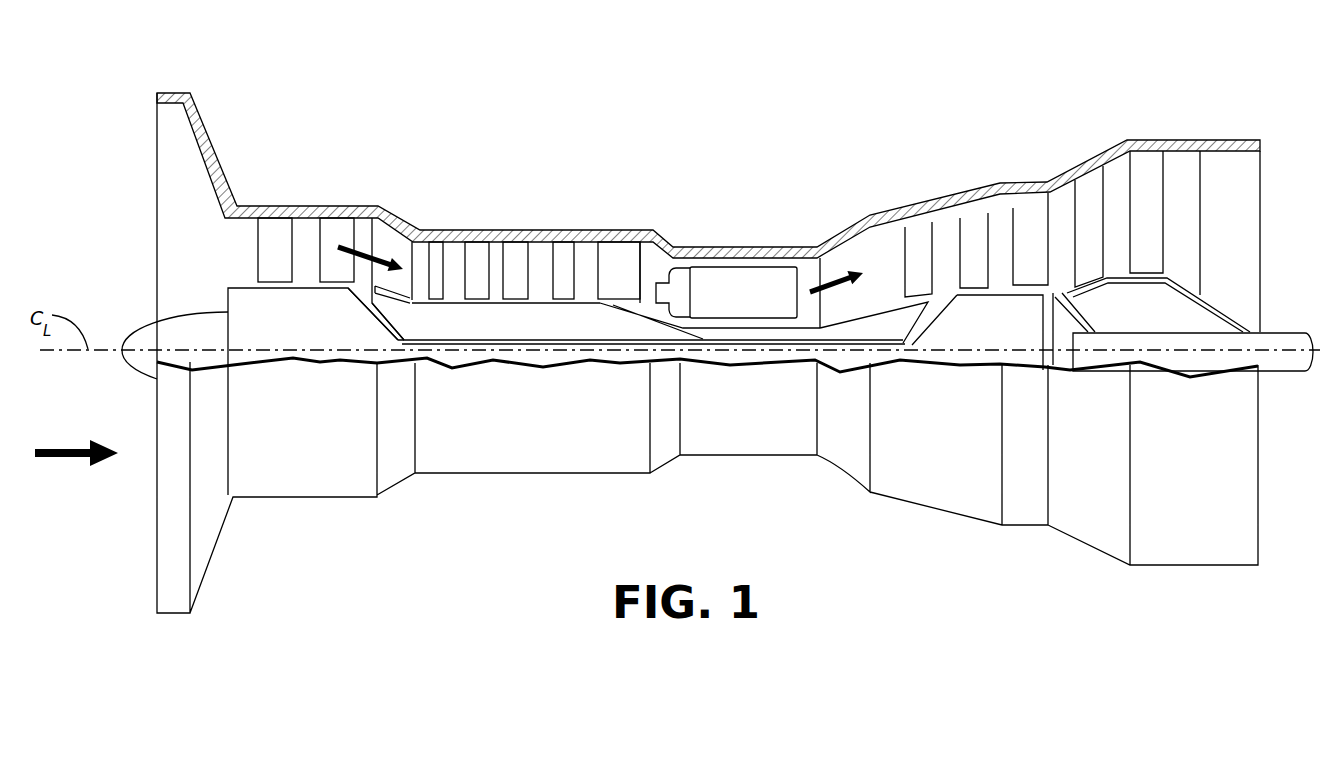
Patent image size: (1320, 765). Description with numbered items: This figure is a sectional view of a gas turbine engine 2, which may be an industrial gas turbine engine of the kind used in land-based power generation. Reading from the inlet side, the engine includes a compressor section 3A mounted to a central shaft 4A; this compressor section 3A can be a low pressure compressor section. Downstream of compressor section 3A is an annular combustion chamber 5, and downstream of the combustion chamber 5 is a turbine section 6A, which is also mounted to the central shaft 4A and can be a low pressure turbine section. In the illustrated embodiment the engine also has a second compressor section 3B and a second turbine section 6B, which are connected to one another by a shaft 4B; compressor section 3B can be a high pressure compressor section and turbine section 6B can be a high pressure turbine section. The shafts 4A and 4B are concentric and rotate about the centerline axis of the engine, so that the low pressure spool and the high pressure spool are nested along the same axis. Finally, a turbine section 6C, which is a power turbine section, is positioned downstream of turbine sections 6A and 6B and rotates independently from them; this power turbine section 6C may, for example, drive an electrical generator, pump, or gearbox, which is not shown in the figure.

The gas turbine engine 2 is at (818, 85).
The compressor section 3A is at (288, 190).
The compressor section 3B is at (555, 203).
The central shaft 4A is at (386, 326).
The shaft 4B is at (632, 312).
The annular combustion chamber 5 is at (710, 245).
The turbine section 6B is at (922, 195).
The turbine section 6A is at (1038, 160).
The turbine section 6C is at (1198, 133).